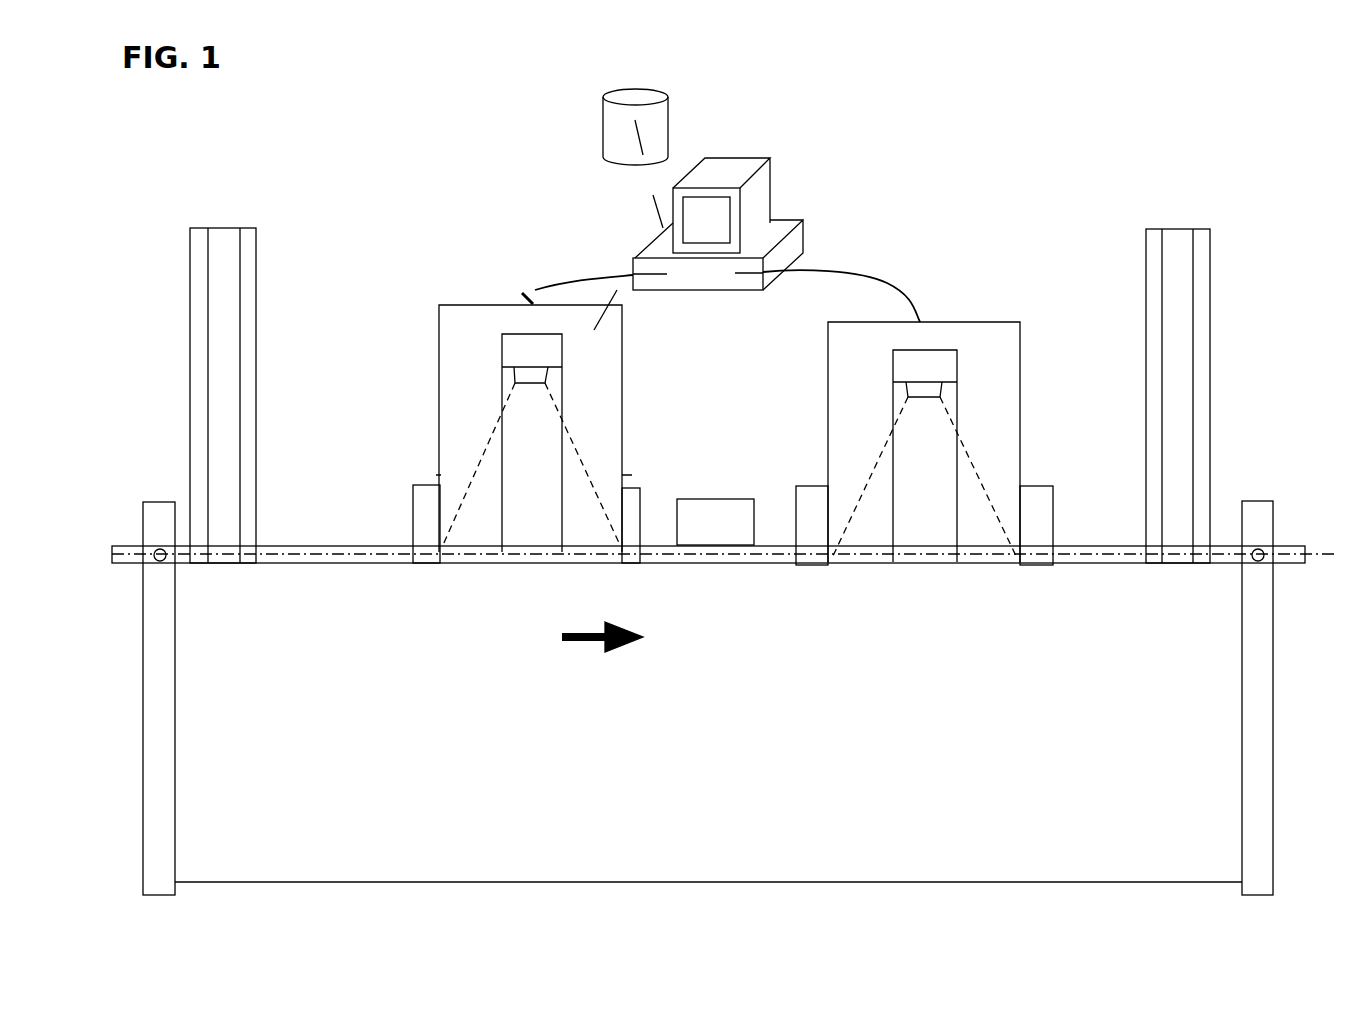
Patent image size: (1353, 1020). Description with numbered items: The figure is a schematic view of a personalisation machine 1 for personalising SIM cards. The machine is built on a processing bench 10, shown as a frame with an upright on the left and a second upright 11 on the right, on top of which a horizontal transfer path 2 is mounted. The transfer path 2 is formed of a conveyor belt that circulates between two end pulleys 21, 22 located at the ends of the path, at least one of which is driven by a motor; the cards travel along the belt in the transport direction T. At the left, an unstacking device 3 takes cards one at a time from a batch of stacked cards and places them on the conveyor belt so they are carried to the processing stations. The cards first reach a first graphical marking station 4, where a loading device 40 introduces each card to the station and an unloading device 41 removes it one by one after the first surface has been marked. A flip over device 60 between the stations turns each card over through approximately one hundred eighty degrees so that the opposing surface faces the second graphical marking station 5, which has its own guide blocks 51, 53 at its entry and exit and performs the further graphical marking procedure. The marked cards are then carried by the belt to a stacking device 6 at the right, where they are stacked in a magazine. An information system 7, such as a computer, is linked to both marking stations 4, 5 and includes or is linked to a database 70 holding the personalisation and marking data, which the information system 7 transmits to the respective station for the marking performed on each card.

The personalisation machine 1 is at (1178, 107).
The horizontal transfer path 2 is at (1297, 558).
The unstacking device 3 is at (208, 272).
The first graphical marking station 4 is at (433, 323).
The second graphical marking station 5 is at (990, 348).
The stacking device 6 is at (1182, 280).
The information system 7 is at (740, 170).
The processing bench 10 is at (157, 737).
The right frame post 11 is at (1255, 770).
The end pulley 21 is at (1243, 563).
The end pulley 22 is at (172, 565).
The loading device 40 is at (430, 512).
The unloading device 41 is at (637, 492).
The third guide block 51 is at (800, 502).
The fourth guide block 53 is at (1040, 513).
The flip over device 60 is at (700, 522).
The database 70 is at (640, 90).
The transport direction T is at (600, 647).